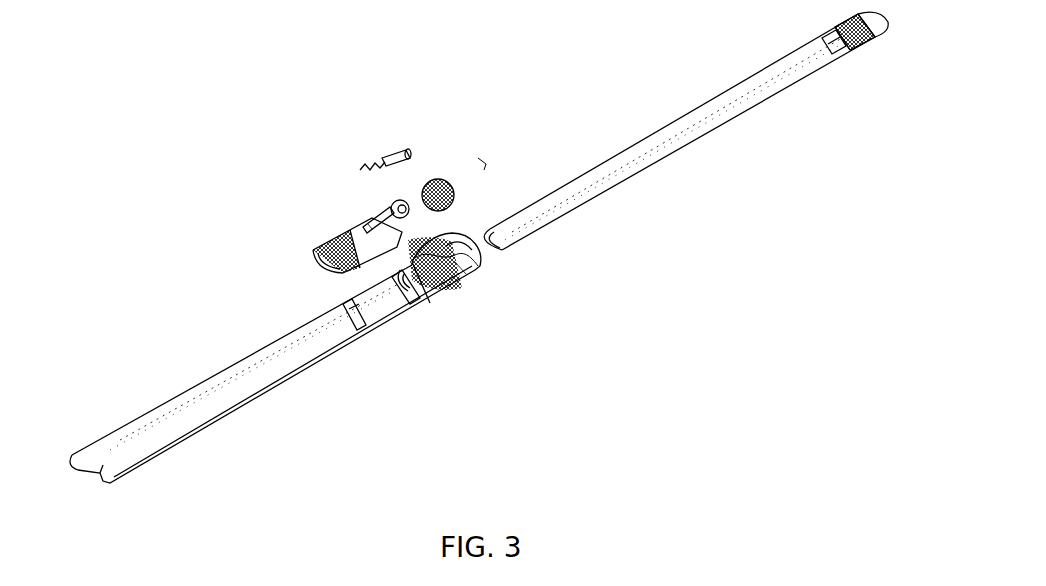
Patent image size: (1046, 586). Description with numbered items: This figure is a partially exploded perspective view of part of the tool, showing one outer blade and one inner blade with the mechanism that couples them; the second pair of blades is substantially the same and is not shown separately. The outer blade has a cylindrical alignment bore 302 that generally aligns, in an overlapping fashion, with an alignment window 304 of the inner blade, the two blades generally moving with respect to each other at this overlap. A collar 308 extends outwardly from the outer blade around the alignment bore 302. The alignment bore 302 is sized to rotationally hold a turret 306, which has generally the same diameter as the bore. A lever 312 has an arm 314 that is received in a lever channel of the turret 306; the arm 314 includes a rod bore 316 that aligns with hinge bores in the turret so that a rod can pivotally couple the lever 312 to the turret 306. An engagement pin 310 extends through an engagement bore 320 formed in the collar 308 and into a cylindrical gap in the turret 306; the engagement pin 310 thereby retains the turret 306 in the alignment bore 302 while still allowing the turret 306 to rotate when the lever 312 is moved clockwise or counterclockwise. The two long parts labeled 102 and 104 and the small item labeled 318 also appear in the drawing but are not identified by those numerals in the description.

The lower housing 102 is at (237, 357).
The upper housing 104 is at (651, 119).
The alignment bore 302 is at (463, 292).
The alignment window 304 is at (843, 57).
The turret 306 is at (484, 160).
The collar 308 is at (468, 266).
The engagement pin 310 is at (494, 124).
The lever 312 is at (325, 243).
The arm 314 is at (374, 212).
The rod bore 316 is at (385, 206).
The pin 318 is at (362, 166).
The engagement bore 320 is at (458, 234).